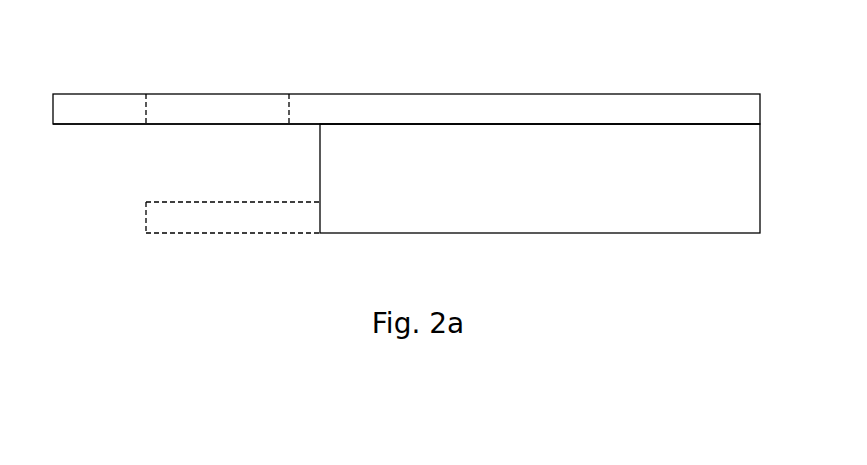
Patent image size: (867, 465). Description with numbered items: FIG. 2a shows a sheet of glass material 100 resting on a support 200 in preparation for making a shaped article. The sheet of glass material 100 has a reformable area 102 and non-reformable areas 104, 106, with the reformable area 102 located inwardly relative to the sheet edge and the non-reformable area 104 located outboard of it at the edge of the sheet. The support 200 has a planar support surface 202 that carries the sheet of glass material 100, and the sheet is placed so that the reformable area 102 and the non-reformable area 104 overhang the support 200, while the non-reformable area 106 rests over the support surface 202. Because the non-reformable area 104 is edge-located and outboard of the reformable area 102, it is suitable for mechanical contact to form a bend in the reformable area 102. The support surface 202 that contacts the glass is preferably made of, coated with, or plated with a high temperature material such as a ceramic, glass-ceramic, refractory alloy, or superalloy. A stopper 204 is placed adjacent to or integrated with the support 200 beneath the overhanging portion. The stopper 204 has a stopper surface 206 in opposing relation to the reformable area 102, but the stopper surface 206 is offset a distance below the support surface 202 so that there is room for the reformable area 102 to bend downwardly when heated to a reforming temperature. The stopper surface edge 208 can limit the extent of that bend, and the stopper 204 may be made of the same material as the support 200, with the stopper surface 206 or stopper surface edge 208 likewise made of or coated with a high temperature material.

The sheet of glass material 100 is at (663, 87).
The reformable area 102 is at (208, 103).
The non-reformable area 104 is at (89, 103).
The non-reformable area 106 is at (467, 107).
The support 200 is at (540, 207).
The support surface 202 is at (592, 123).
The stopper 204 is at (234, 217).
The stopper surface 206 is at (233, 202).
The stopper surface edge 208 is at (146, 202).